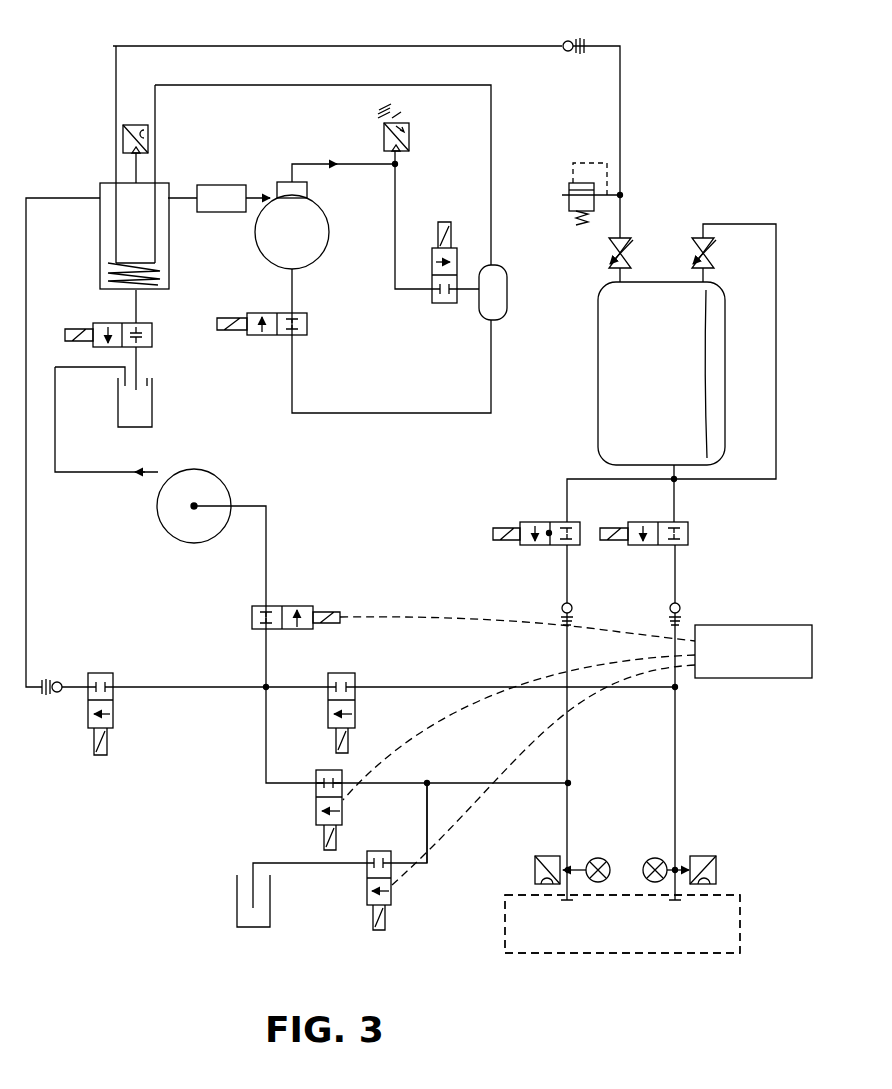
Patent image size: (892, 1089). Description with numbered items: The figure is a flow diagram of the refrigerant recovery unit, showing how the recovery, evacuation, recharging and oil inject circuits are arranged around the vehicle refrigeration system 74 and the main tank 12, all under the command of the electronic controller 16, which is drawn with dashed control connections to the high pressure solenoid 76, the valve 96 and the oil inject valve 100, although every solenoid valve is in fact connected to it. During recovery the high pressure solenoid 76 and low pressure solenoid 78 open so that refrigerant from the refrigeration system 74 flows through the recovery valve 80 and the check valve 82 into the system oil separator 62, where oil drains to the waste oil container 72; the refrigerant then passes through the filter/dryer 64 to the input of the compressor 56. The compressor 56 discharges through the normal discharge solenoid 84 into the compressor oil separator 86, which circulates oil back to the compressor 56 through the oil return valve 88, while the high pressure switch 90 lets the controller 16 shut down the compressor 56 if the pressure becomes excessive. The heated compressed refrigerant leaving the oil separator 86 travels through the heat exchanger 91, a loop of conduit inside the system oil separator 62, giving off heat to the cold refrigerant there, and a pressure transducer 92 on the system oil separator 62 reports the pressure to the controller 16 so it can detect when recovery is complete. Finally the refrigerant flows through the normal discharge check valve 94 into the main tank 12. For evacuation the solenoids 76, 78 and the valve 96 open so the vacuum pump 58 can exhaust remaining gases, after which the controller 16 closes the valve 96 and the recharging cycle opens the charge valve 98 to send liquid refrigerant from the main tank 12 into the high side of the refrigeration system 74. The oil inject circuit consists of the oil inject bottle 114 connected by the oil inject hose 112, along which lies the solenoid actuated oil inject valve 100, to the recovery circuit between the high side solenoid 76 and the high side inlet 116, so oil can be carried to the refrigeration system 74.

The main tank 12 is at (598, 354).
The electronic controller 16 is at (735, 625).
The compressor 56 is at (318, 207).
The vacuum pump 58 is at (222, 480).
The system oil separator 62 is at (169, 256).
The filter/dryer 64 is at (224, 185).
The waste oil container 72 is at (145, 404).
The refrigeration system 74 is at (505, 895).
The high pressure solenoid 76 is at (316, 816).
The low pressure solenoid 78 is at (355, 678).
The recovery valve 80 is at (105, 672).
The check valve 82 is at (60, 682).
The normal discharge solenoid 84 is at (457, 252).
The compressor oil separator 86 is at (507, 276).
The oil return valve 88 is at (307, 320).
The high pressure switch 90 is at (404, 121).
The heat exchanger 91 is at (158, 285).
The pressure transducer 92 is at (148, 138).
The normal discharge check valve 94 is at (572, 40).
The valve 96 is at (295, 605).
The charge valve 98 is at (580, 528).
The oil inject valve 100 is at (391, 898).
The oil inject hose 112 is at (427, 800).
The oil inject bottle 114 is at (237, 913).
The high side inlet 116 is at (548, 925).